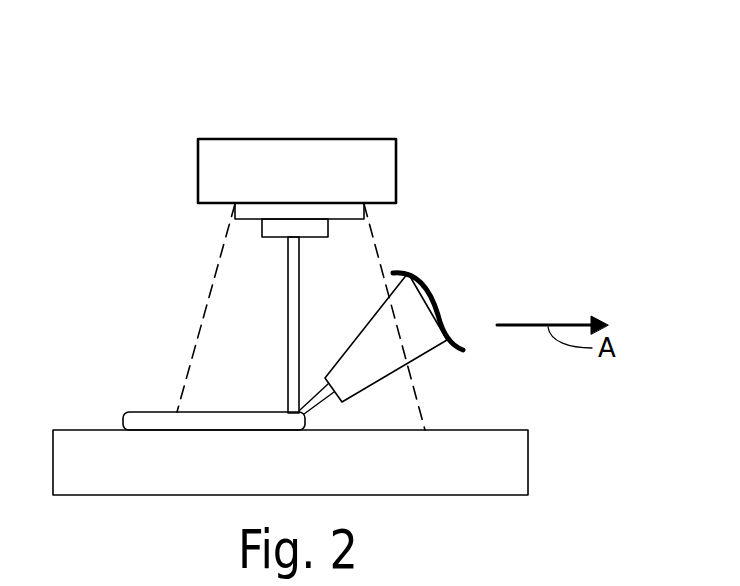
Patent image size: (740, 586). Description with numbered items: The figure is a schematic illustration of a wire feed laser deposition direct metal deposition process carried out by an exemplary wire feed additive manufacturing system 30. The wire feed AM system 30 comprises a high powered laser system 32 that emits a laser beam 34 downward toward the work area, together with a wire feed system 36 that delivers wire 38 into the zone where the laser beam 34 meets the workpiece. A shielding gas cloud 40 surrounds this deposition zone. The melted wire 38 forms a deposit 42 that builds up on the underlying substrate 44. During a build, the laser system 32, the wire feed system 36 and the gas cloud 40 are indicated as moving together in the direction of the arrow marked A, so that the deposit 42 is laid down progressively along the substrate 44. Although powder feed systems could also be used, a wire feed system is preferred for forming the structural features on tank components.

The wire feed AM system 30 is at (570, 90).
The high powered laser system 32 is at (363, 170).
The laser beam 34 is at (293, 295).
The wire feed system 36 is at (393, 312).
The wire 38 is at (303, 413).
The shielding gas cloud 40 is at (337, 270).
The deposit 42 is at (147, 422).
The substrate 44 is at (483, 459).